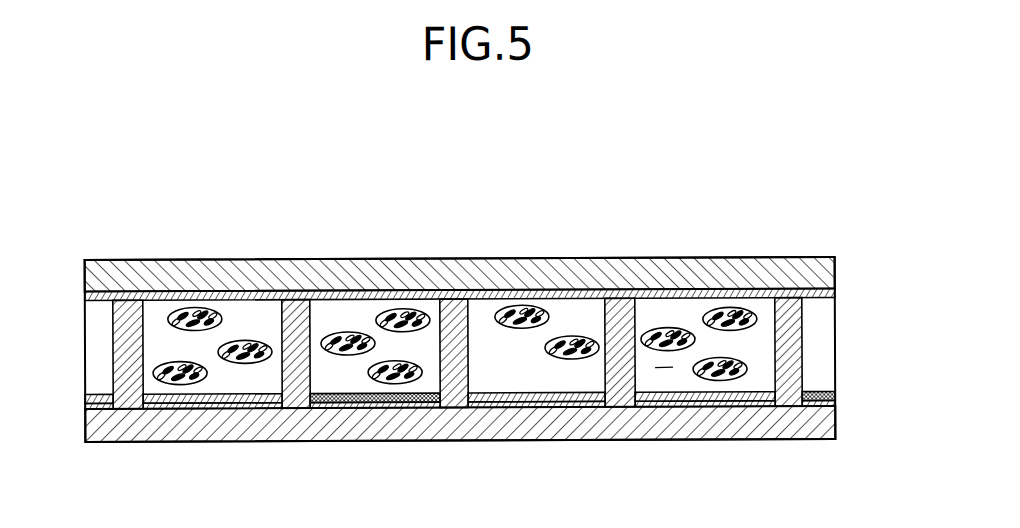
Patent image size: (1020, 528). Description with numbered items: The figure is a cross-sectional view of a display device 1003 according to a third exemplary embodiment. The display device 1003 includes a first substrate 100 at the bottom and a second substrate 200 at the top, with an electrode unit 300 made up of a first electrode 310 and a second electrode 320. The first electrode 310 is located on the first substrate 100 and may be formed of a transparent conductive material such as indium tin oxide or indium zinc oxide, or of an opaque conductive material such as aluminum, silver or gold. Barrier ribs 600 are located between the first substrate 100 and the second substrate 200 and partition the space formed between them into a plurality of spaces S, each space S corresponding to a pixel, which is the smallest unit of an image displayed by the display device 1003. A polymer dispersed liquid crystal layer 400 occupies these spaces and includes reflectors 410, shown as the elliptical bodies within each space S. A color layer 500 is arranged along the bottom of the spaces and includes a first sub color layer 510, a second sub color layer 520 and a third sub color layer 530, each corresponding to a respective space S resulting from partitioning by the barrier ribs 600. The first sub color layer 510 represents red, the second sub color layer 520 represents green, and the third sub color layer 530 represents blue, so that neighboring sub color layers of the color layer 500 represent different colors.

The first substrate 100 is at (325, 442).
The second substrate 200 is at (405, 259).
The electrode unit 300 is at (459, 282).
The first electrode 310 is at (173, 401).
The second electrode 320 is at (147, 296).
The polymer dispersed liquid crystal layer 400 is at (757, 354).
The reflector 410 is at (743, 313).
The color layer 500 is at (254, 406).
The first sub color layer 510 is at (200, 403).
The second sub color layer 520 is at (400, 408).
The third sub color layer 530 is at (101, 400).
The barrier ribs 600 is at (288, 301).
The display device 1003 is at (458, 188).
The space S is at (660, 376).